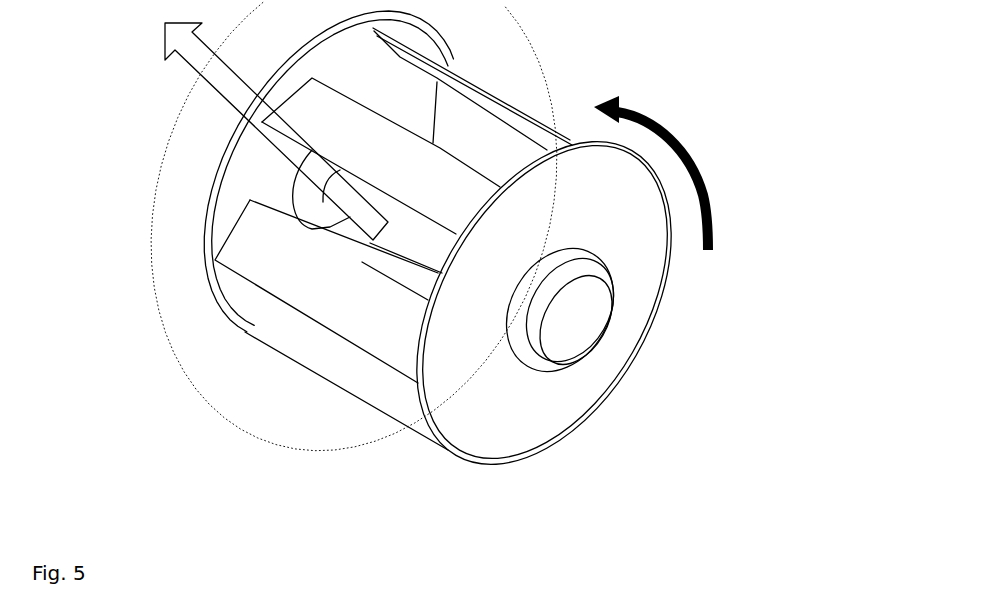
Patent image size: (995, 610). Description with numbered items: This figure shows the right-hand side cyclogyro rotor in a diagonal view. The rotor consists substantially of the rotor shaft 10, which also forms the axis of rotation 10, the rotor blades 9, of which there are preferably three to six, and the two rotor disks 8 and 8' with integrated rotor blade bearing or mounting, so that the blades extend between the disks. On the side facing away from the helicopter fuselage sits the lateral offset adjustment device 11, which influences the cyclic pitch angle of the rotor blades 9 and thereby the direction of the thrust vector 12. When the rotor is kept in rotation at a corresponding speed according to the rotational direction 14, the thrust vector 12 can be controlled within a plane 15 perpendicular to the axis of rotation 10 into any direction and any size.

The rotor disk 8 is at (584, 303).
The rotor disk 8' is at (313, 230).
The rotor blades 9 is at (323, 302).
The rotor shaft 10 is at (412, 238).
The lateral offset adjustment device 11 is at (560, 320).
The thrust vector 12 is at (222, 80).
The rotational direction 14 is at (710, 170).
The plane perpendicular to the axis of rotation 15 is at (493, 17).